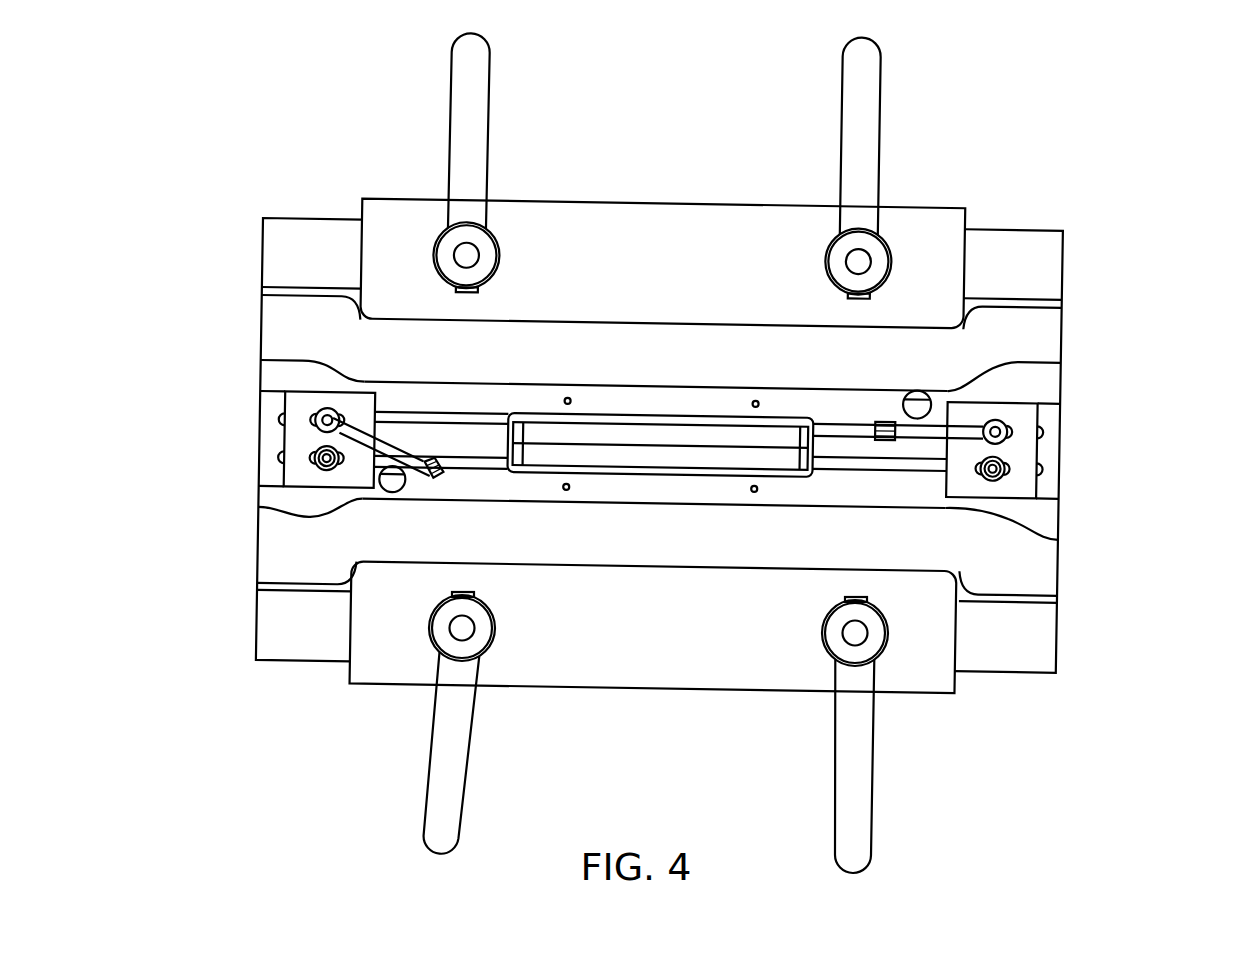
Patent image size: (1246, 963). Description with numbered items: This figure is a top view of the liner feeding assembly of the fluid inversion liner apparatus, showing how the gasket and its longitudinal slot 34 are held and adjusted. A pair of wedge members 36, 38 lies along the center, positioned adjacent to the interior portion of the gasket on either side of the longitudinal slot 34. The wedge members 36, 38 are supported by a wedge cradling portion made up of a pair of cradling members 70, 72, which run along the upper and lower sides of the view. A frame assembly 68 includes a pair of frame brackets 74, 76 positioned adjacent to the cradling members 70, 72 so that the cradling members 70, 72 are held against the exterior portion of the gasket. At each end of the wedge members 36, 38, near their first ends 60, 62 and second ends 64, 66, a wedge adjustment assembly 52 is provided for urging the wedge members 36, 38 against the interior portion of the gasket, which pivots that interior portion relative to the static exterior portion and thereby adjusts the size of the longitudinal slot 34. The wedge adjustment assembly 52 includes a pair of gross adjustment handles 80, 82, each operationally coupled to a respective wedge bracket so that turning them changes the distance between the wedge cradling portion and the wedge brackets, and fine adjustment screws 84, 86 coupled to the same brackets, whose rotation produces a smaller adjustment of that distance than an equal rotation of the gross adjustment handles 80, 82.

The frame assembly 68 is at (230, 253).
The frame bracket 76 is at (678, 215).
The frame bracket 74 is at (657, 676).
The cradling member 72 is at (1050, 337).
The cradling member 70 is at (1042, 574).
The first end of wedge member 62 is at (345, 372).
The second end of wedge member 66 is at (1000, 370).
The first end of wedge member 60 is at (347, 507).
The second end of wedge member 64 is at (1062, 540).
The wedge adjustment assembly 52 is at (260, 437).
The gross adjustment handle 80 is at (314, 413).
The fine adjustment screw 84 is at (314, 462).
The gross adjustment handle 82 is at (1010, 425).
The fine adjustment screw 86 is at (1015, 478).
The longitudinal slot 34 is at (720, 444).
The wedge member 38 is at (636, 430).
The wedge member 36 is at (600, 457).